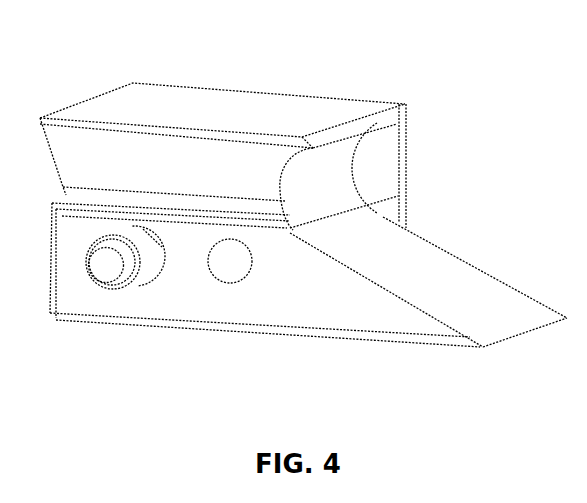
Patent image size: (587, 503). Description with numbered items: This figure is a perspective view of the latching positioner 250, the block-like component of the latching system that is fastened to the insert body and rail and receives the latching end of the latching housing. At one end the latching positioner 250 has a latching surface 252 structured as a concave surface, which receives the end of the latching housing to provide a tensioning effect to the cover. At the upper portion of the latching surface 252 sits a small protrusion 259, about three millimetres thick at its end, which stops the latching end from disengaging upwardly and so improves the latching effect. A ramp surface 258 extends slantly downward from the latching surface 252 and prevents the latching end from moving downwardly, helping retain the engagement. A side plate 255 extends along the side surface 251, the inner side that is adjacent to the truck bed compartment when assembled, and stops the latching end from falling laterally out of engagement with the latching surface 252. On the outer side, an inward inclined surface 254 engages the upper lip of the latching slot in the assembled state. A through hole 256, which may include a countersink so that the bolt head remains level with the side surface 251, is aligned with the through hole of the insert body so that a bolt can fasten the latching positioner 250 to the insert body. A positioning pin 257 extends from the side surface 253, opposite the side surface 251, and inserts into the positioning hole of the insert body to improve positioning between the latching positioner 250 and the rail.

The latching positioner 250 is at (268, 106).
The side surface 251 is at (405, 152).
The latching surface 252 is at (313, 173).
The side surface 253 is at (327, 296).
The inward inclined surface 254 is at (98, 169).
The side plate 255 is at (402, 195).
The through hole 256 is at (242, 278).
The positioning pin 257 is at (143, 267).
The ramp surface 258 is at (407, 282).
The protrusion 259 is at (390, 123).